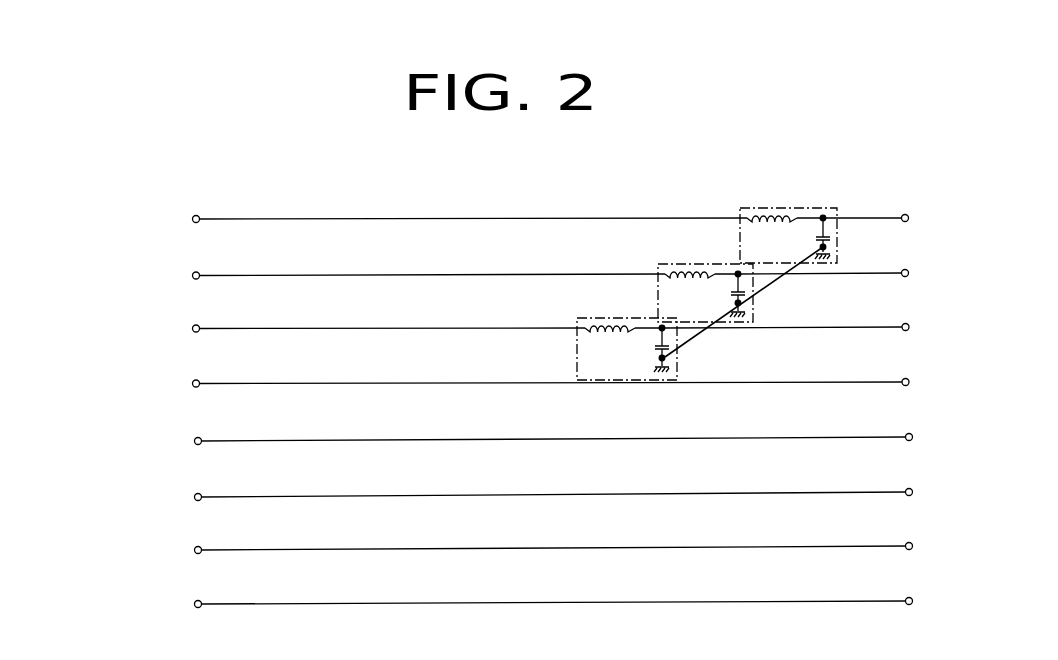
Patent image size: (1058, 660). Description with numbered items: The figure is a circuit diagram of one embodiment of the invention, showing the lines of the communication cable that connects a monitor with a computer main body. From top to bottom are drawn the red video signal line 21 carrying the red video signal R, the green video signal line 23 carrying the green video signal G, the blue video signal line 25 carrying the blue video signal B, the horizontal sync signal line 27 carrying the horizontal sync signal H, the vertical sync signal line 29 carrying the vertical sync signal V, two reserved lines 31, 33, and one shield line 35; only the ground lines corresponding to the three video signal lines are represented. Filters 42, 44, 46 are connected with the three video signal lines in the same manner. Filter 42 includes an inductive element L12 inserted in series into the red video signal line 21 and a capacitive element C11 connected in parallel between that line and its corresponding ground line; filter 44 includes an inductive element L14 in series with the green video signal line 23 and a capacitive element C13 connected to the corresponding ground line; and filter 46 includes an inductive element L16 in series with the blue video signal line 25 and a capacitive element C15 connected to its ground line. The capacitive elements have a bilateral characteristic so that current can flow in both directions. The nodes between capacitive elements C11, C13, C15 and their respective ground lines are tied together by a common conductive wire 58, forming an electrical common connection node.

The red video signal line 21 is at (539, 210).
The green video signal line 23 is at (539, 265).
The blue video signal line 25 is at (539, 318).
The horizontal sync signal line 27 is at (539, 373).
The vertical sync signal line 29 is at (542, 432).
The reserved line 31 is at (497, 487).
The reserved line 33 is at (497, 541).
The shield line 35 is at (508, 594).
The filter 42 is at (790, 219).
The filter 44 is at (719, 276).
The filter 46 is at (638, 331).
The common conductive wire 58 is at (773, 283).
The inductive element L12 is at (772, 237).
The inductive element L14 is at (690, 293).
The inductive element L16 is at (610, 347).
The capacitive element C11 is at (836, 240).
The capacitive element C13 is at (748, 297).
The capacitive element C15 is at (670, 358).